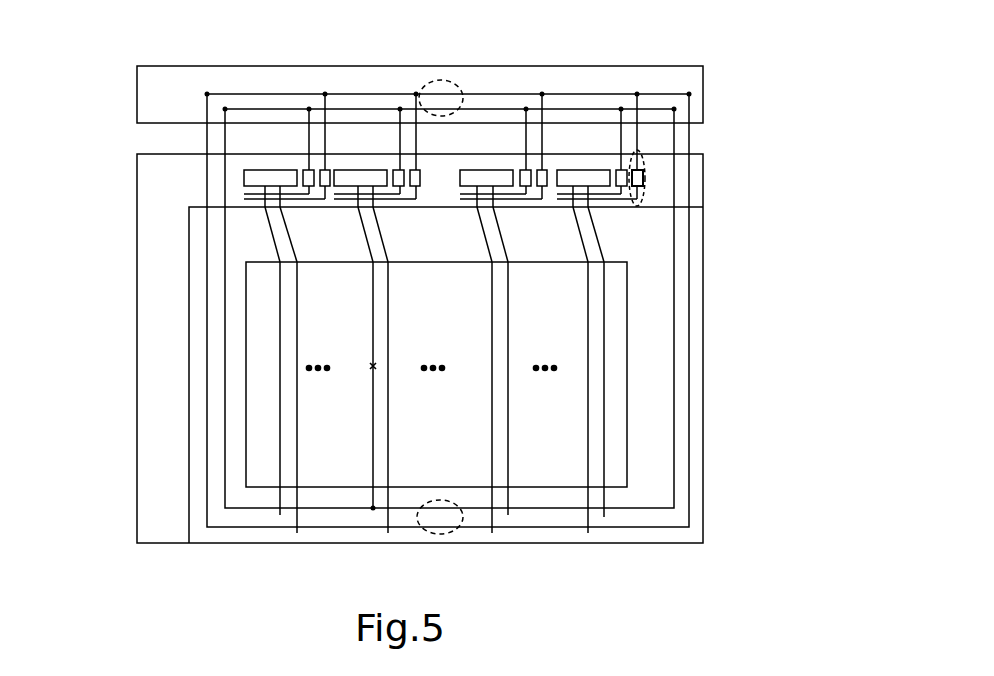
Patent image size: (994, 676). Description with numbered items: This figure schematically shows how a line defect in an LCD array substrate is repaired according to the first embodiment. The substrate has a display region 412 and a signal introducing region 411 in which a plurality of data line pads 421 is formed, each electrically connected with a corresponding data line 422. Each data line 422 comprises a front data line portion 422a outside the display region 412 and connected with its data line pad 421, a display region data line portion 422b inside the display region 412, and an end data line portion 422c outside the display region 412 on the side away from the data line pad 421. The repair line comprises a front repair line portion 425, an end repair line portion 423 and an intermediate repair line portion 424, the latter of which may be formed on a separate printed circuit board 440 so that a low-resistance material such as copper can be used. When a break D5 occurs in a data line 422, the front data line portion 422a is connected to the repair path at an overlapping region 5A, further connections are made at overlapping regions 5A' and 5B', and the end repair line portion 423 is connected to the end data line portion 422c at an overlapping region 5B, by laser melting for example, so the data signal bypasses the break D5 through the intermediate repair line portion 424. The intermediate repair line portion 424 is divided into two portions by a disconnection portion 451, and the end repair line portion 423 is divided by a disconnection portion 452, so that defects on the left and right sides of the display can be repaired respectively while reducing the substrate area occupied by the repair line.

The second circuit board 440 is at (687, 82).
The signal introducing region 411 is at (163, 214).
The display region 412 is at (265, 347).
The end repair line portion 423 is at (226, 414).
The intermediate repair line portion 424 is at (280, 108).
The data line pad 421 is at (371, 176).
The front repair line portion 425 is at (650, 180).
The disconnection portion 451 is at (443, 76).
The disconnection portion 452 is at (440, 541).
The data line 422 is at (546, 370).
The front data line portion 422a is at (366, 233).
The display region data line portion 422b is at (372, 312).
The end data line portion 422c is at (372, 493).
The overlapping region 5A is at (349, 91).
The overlapping region 5A' is at (455, 236).
The overlapping region 5B is at (382, 557).
The overlapping region 5B' is at (400, 238).
The break D5 is at (432, 369).